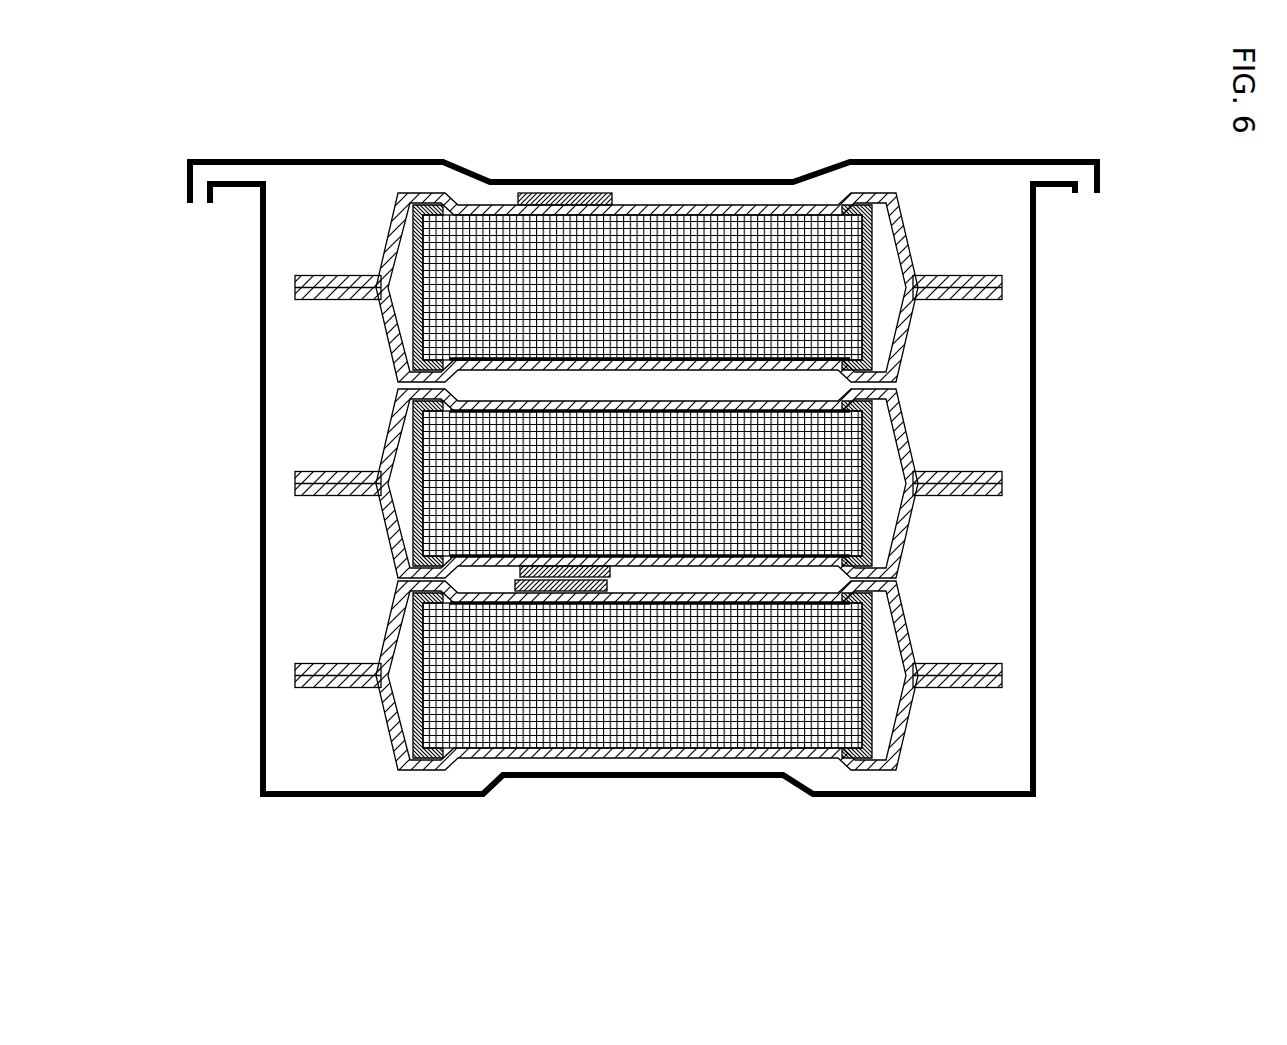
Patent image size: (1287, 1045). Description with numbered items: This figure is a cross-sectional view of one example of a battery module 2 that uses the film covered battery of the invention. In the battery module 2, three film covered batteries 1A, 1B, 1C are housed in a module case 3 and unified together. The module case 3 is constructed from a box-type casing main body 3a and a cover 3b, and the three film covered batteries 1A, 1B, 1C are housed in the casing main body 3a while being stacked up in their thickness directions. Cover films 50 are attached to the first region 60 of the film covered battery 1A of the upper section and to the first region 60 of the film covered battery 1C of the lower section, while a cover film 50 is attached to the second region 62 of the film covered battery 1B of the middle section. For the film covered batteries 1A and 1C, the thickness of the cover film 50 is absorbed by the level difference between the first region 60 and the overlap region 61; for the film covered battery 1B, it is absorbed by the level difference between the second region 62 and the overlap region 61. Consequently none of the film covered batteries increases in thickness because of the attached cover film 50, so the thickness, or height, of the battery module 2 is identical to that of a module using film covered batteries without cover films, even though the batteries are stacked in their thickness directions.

The battery module 2 is at (792, 124).
The module case 3 is at (712, 488).
The casing main body 3a is at (1037, 273).
The cover 3b is at (1100, 183).
The film covered battery 1A is at (947, 223).
The film covered battery 1B is at (957, 448).
The film covered battery 1C is at (965, 646).
The cover film 50 is at (573, 194).
The first region 60 is at (630, 397).
The overlap region 61 is at (420, 193).
The second region 62 is at (690, 360).